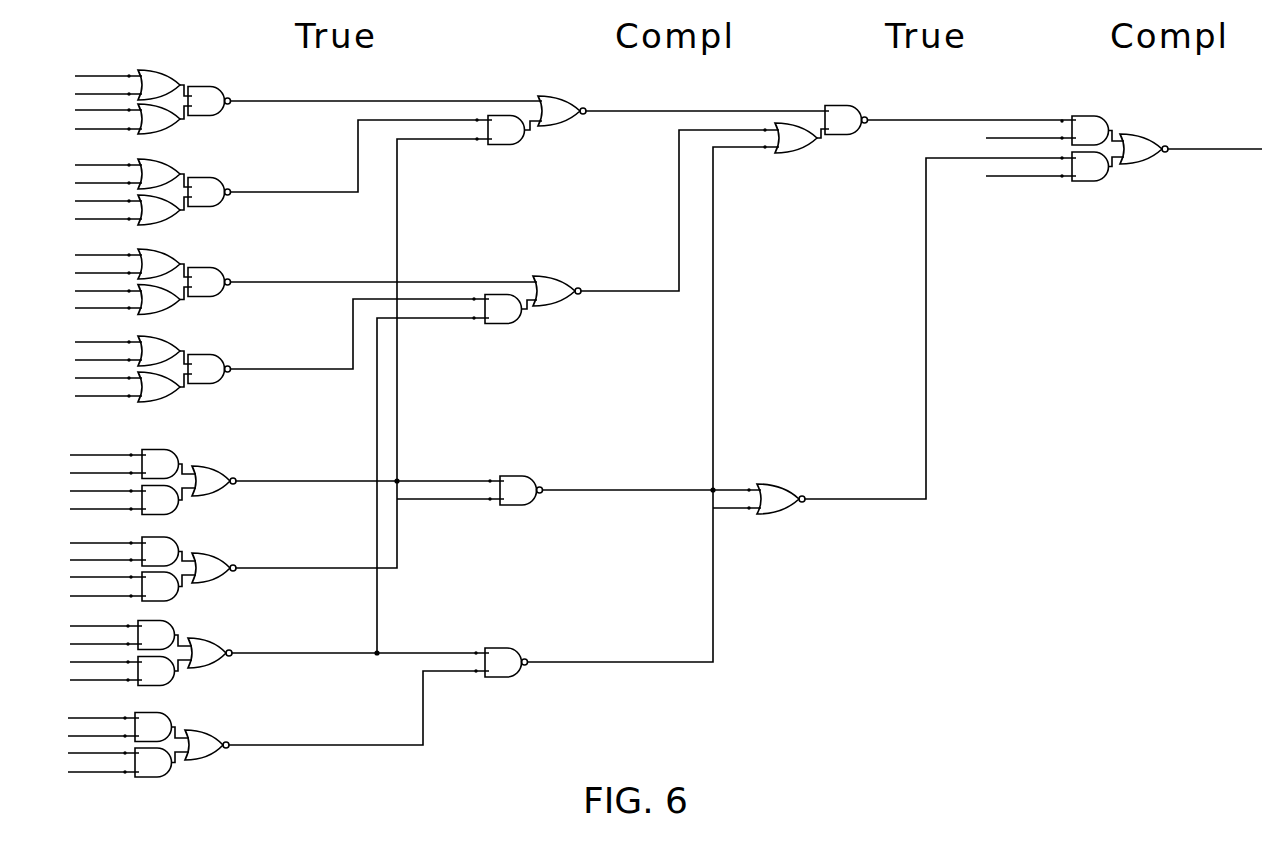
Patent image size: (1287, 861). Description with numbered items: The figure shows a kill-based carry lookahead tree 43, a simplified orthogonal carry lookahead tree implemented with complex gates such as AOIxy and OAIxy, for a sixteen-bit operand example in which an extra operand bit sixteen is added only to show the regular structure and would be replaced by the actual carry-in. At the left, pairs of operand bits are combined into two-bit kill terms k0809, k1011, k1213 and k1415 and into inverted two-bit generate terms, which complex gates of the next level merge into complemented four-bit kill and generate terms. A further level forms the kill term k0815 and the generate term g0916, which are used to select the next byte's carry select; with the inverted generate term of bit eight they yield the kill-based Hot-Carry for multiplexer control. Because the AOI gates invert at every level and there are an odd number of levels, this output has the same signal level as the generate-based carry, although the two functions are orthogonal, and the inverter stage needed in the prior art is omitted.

The kill-based carry lookahead tree 43 is at (1024, 497).
The k0809 kill term k0809 is at (386, 91).
The k1011 kill term k1011 is at (361, 156).
The k1213 kill term k1213 is at (384, 272).
The k1415 kill term k1415 is at (360, 334).
The k0815 kill term k0815 is at (972, 110).
The g0916 generate term g0916 is at (940, 328).